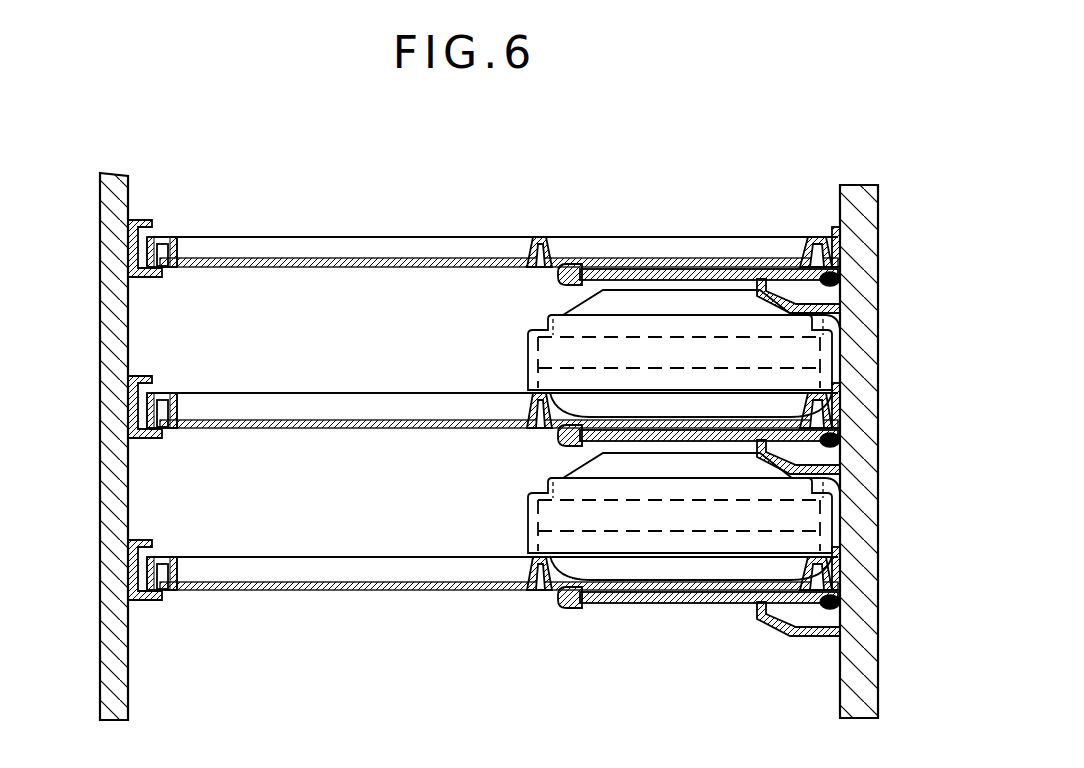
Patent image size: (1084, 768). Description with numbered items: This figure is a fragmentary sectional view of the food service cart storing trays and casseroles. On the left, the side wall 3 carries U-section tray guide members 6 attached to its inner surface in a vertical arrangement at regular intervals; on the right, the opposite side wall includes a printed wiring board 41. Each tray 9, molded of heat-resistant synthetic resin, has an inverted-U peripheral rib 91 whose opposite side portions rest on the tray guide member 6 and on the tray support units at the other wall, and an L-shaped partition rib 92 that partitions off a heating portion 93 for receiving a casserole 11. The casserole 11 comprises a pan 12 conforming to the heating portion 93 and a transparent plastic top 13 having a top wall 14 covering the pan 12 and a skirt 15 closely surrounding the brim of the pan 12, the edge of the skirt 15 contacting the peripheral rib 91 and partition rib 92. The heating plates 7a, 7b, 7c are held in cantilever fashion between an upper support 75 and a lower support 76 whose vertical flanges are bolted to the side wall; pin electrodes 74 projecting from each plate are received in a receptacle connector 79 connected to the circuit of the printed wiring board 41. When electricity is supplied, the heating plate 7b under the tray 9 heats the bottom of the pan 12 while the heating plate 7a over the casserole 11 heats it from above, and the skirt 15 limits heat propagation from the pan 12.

The side wall 3 is at (102, 284).
The printed wiring board 41 is at (860, 248).
The tray 9 is at (438, 237).
The peripheral rib 91 is at (153, 238).
The partition rib 92 is at (541, 237).
The heating portion 93 is at (692, 238).
The tray guide member 6 is at (150, 278).
The heating plate 7a is at (620, 266).
The heating plate 7b is at (578, 450).
The lower frame channel 7c is at (655, 604).
The receptacle connector 79 is at (842, 283).
The pin electrode 74 is at (850, 292).
The upper support 75 is at (846, 592).
The lower support 76 is at (810, 630).
The top 13 is at (639, 348).
The top wall 14 is at (580, 304).
The skirt 15 is at (530, 352).
The pan 12 is at (592, 400).
The casserole 11 is at (790, 513).